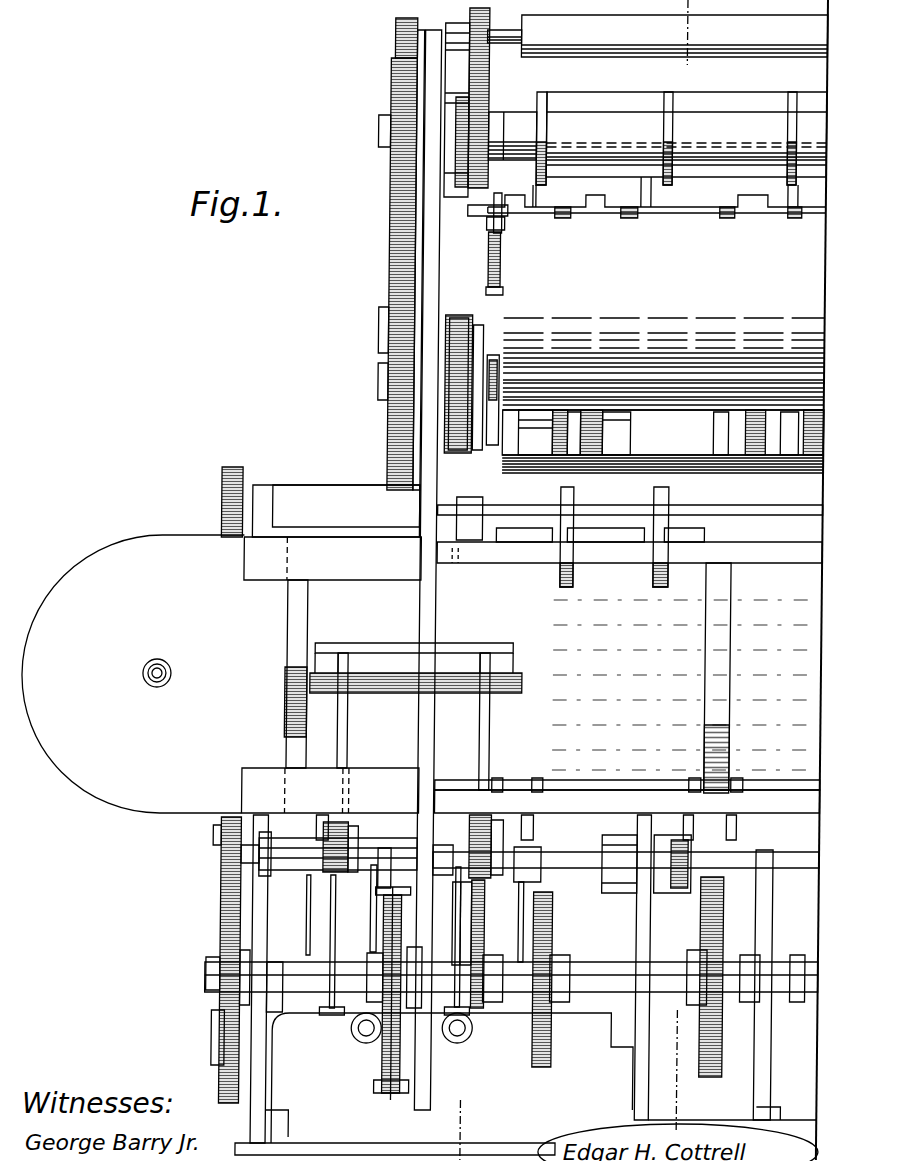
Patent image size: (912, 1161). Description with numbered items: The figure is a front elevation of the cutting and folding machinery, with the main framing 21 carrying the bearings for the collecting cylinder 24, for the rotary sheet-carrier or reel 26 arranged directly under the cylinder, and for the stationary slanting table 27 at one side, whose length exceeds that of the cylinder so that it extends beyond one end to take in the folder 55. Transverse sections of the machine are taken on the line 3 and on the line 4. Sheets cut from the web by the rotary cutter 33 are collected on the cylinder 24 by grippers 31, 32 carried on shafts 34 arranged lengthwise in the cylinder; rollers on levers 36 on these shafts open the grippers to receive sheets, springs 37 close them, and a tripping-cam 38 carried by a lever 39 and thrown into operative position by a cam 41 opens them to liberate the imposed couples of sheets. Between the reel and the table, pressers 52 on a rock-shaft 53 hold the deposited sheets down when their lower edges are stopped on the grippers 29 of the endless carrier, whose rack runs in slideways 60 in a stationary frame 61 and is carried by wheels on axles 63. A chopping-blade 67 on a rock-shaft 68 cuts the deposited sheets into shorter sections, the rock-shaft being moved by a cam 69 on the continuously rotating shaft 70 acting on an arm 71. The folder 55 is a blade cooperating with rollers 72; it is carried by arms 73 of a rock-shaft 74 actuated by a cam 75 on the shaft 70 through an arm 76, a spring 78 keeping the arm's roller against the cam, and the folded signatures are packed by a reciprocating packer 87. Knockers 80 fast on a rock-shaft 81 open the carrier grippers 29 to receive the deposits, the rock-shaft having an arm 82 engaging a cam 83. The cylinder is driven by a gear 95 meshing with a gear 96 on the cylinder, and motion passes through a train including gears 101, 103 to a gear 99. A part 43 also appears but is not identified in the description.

The section line 3 3 is at (458, 1118).
The section line 4 4 is at (688, 565).
The main framing 21 is at (445, 723).
The collecting cylinder 24 is at (664, 306).
The rotary sheet-carrier (reel) 26 is at (630, 495).
The stationary slanting table 27 is at (683, 685).
The grippers 29 is at (745, 779).
The gripper 31 is at (795, 220).
The gripper 32 is at (608, 430).
The rotary cutter 33 is at (657, 135).
The gripper-shafts 34 is at (695, 430).
The levers 36 is at (507, 223).
The springs 37 is at (503, 262).
The tripping-cam 38 is at (488, 448).
The lever 39 is at (478, 348).
The cam 41 is at (440, 403).
The roller 43 is at (657, 28).
The knockers or pressers 52 is at (660, 586).
The rock-shaft 53 is at (687, 512).
The folder 55 is at (510, 680).
The slideways 60 is at (628, 678).
The stationary frame 61 is at (133, 674).
The axles 63 is at (172, 668).
The chopping-blade 67 is at (718, 645).
The rock-shaft 68 is at (682, 880).
The cam 69 is at (705, 977).
The shaft 70 is at (511, 975).
The arm 71 is at (658, 967).
The rollers 72 is at (400, 855).
The arms 73 is at (492, 700).
The rock-shaft 74 is at (300, 865).
The cam 75 is at (462, 944).
The arm 76 is at (445, 876).
The spring 78 is at (385, 1040).
The knockers 80 is at (735, 828).
The rock-shaft 81 is at (582, 866).
The arm 82 is at (534, 890).
The cam 83 is at (549, 979).
The reciprocating packer 87 is at (413, 958).
The gear 95 is at (403, 378).
The gear 96 is at (400, 247).
The gear 99 is at (228, 970).
The gear 101 is at (225, 866).
The gear 103 is at (230, 1083).